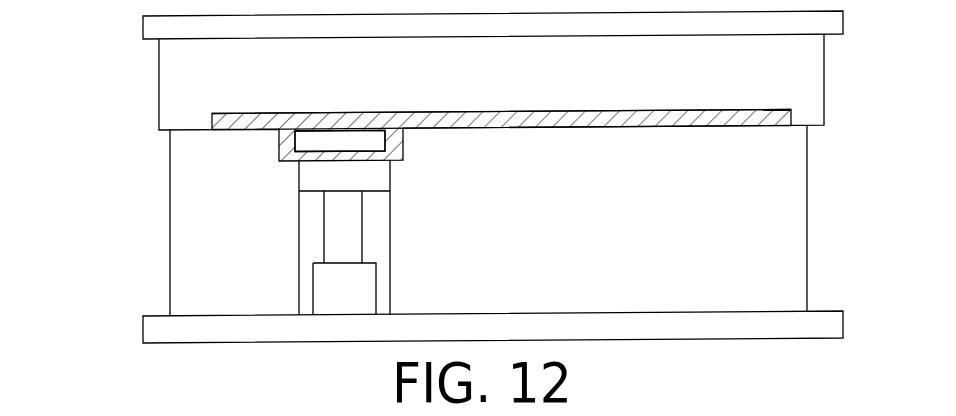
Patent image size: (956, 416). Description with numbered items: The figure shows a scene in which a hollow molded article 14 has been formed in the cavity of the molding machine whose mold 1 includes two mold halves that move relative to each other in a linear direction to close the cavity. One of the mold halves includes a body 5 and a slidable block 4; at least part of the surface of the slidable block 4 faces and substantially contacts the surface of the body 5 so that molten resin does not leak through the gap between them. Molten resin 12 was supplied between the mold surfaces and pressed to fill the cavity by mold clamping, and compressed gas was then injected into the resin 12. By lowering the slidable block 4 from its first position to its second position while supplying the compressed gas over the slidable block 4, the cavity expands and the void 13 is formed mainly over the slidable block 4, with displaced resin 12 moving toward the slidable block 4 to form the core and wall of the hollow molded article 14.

The mold 1 is at (135, 133).
The slidable block 4 is at (370, 175).
The body 5 is at (193, 247).
The resin 12 is at (663, 122).
The void 13 is at (370, 138).
The hollow molded article 14 is at (799, 112).